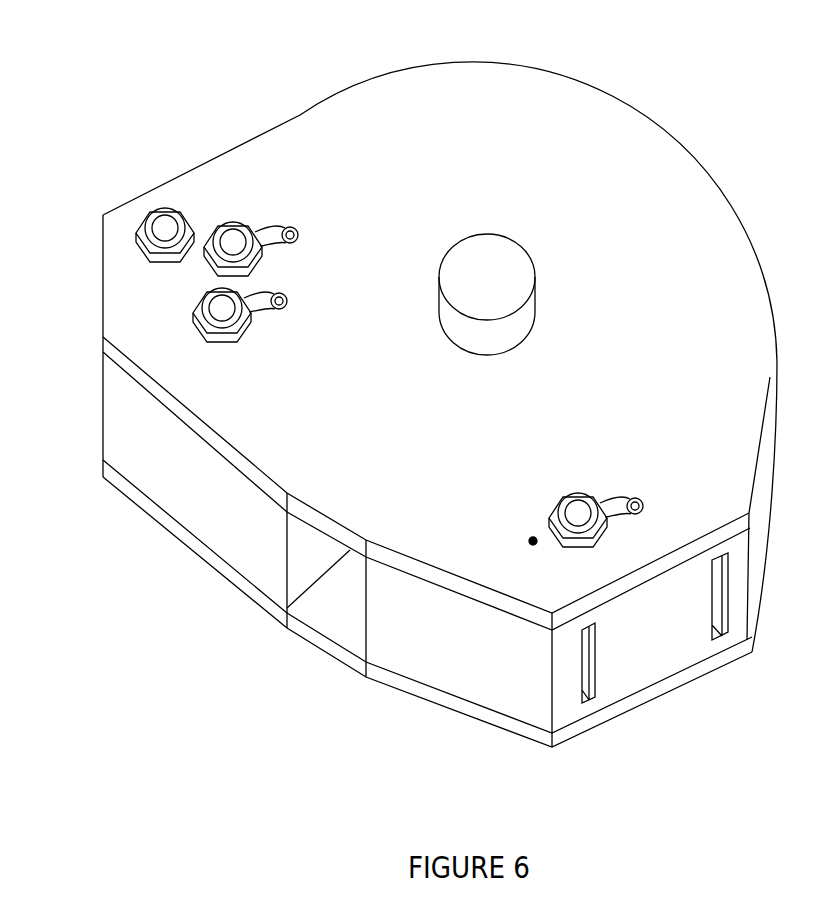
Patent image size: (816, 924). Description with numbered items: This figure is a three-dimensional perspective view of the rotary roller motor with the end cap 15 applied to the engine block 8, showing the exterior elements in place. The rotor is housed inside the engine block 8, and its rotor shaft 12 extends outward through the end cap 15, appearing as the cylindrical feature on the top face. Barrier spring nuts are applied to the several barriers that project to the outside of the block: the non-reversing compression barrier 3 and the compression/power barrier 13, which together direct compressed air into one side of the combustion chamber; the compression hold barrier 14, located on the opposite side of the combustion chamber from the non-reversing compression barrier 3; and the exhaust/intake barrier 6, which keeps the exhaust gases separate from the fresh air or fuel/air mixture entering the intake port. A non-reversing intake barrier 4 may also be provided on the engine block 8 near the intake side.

The non-reversing compression barrier 3 is at (200, 315).
The non-reversing intake barrier 4 is at (510, 538).
The exhaust/intake barrier 6 is at (578, 535).
The engine block 8 is at (195, 478).
The rotor shaft 12 is at (470, 285).
The compression/power barrier 13 is at (203, 222).
The compression hold barrier 14 is at (140, 222).
The end cap 15 is at (287, 608).